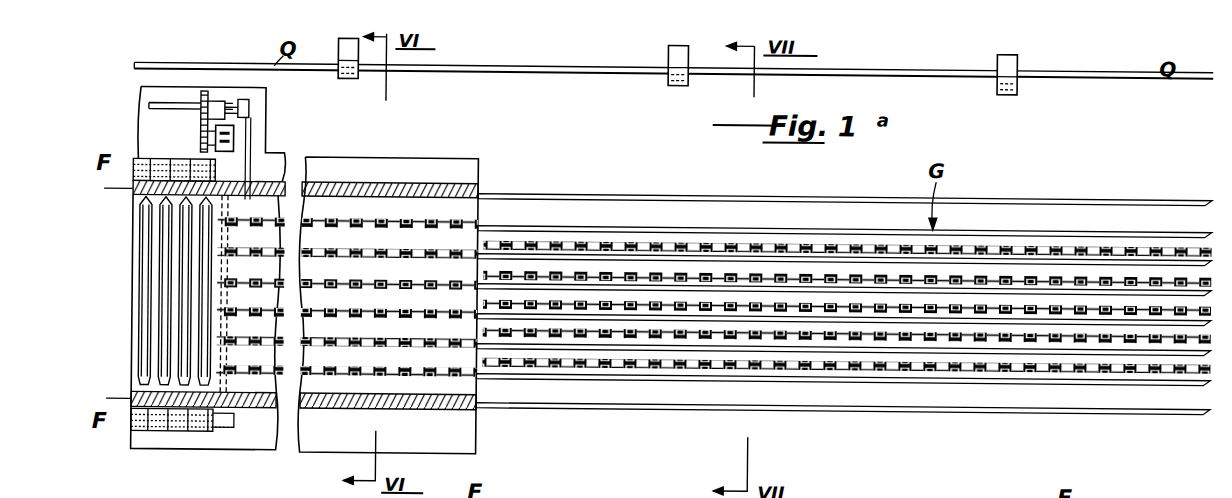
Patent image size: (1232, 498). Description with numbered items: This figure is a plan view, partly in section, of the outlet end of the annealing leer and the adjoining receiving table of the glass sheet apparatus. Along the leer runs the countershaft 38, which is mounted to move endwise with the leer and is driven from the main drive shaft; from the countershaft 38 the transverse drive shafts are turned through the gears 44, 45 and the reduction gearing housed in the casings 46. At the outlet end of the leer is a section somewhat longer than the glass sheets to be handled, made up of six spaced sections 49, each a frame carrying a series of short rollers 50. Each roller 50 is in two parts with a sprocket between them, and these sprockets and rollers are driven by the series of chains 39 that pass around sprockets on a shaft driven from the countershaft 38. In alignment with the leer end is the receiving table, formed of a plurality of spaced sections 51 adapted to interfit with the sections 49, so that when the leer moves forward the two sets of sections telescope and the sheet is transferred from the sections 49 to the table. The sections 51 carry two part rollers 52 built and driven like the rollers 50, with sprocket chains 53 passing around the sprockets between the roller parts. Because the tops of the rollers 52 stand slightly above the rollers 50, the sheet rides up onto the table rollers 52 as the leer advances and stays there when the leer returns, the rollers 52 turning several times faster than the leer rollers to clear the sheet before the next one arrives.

The countershaft 38 is at (160, 106).
The chains 39 is at (383, 222).
The gear 44 is at (205, 150).
The gear 45 is at (203, 92).
The casings 46 is at (235, 140).
The spaced sections 49 is at (450, 214).
The short rollers 50 is at (364, 222).
The spaced sections 51 is at (769, 222).
The two part rollers 52 is at (568, 242).
The sprocket chains 53 is at (635, 242).